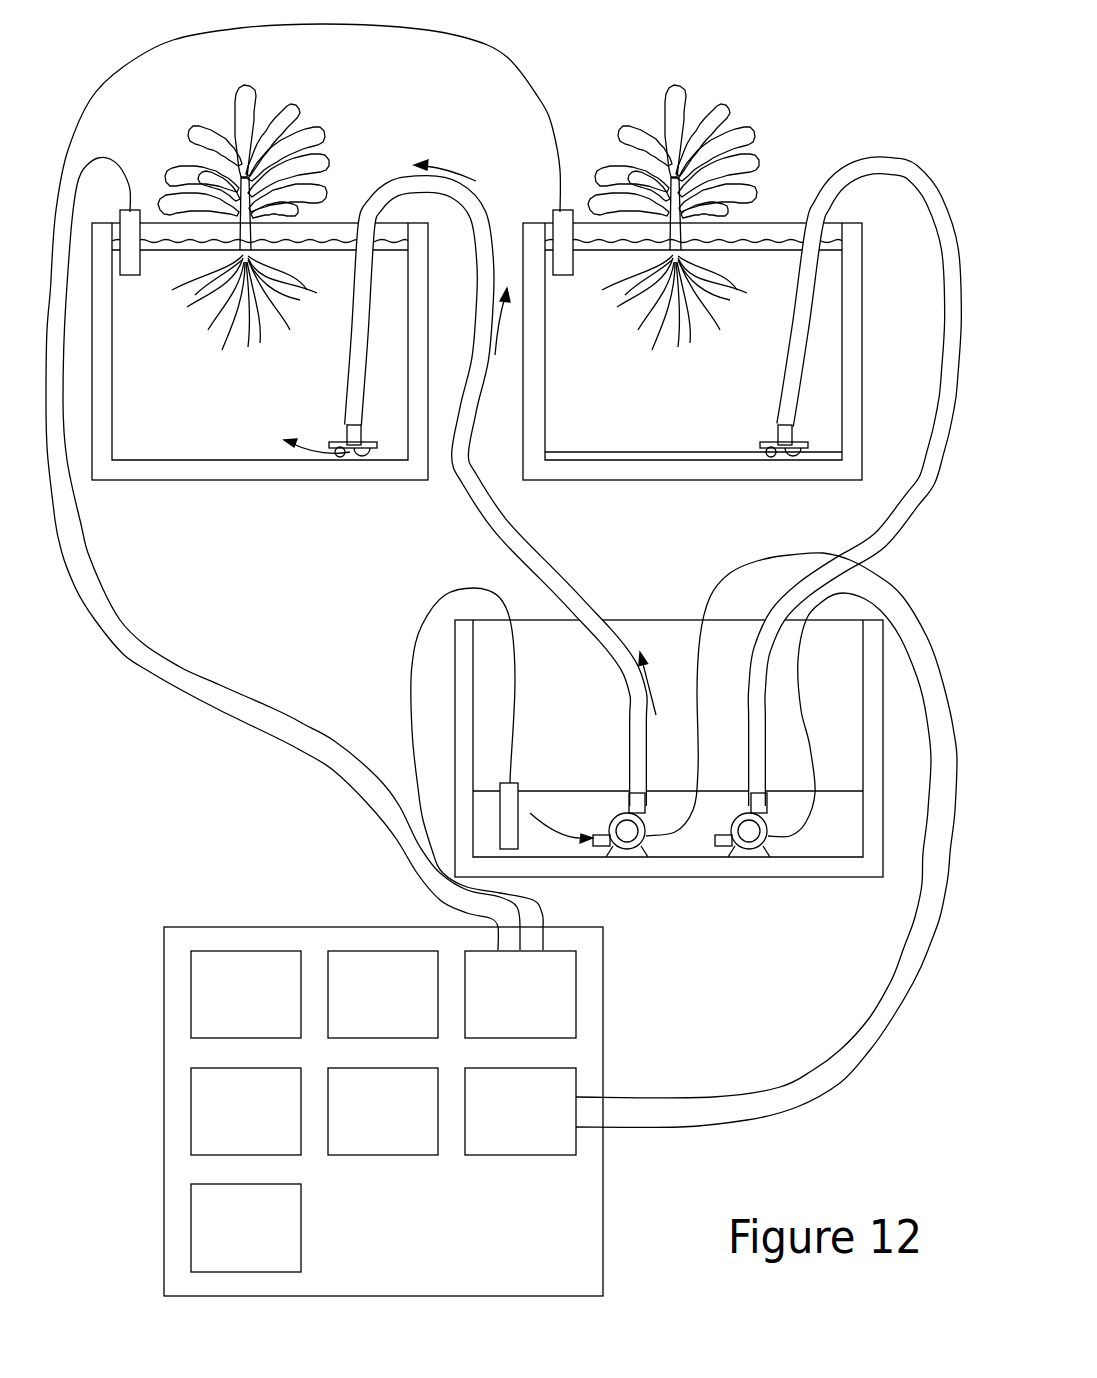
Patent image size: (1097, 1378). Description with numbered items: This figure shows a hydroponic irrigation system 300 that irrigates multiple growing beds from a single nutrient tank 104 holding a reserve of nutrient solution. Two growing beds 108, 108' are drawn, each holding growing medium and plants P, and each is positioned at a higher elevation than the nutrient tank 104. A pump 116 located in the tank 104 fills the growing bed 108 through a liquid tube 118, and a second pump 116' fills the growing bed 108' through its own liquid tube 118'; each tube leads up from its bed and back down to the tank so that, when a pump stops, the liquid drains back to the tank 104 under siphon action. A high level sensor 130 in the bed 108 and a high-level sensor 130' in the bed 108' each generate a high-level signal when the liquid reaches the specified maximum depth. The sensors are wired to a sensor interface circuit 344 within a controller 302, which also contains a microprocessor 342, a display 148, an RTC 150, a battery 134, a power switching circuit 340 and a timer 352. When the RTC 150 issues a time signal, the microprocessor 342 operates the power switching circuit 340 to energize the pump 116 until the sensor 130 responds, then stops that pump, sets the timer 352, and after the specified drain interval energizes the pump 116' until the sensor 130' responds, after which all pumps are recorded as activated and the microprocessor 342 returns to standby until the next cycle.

The system 300 is at (830, 87).
The high level sensor 130 is at (291, 531).
The high-level sensor 130' is at (335, 487).
The growing bed 108 is at (260, 393).
The growing bed 108' is at (692, 395).
The liquid tube 118 is at (470, 483).
The fluid conduit 118' is at (841, 485).
The pump 116 is at (610, 865).
The pump 116' is at (757, 867).
The nutrient tank 104 is at (818, 865).
The controller 302 is at (435, 1257).
The microprocessor 342 is at (246, 994).
The display 148 is at (383, 994).
The sensor interface 344 is at (520, 994).
The RTC 150 is at (246, 1111).
The battery 134 is at (383, 1111).
The power switching circuit 340 is at (520, 1111).
The timer 352 is at (246, 1228).
The plants P is at (283, 122).